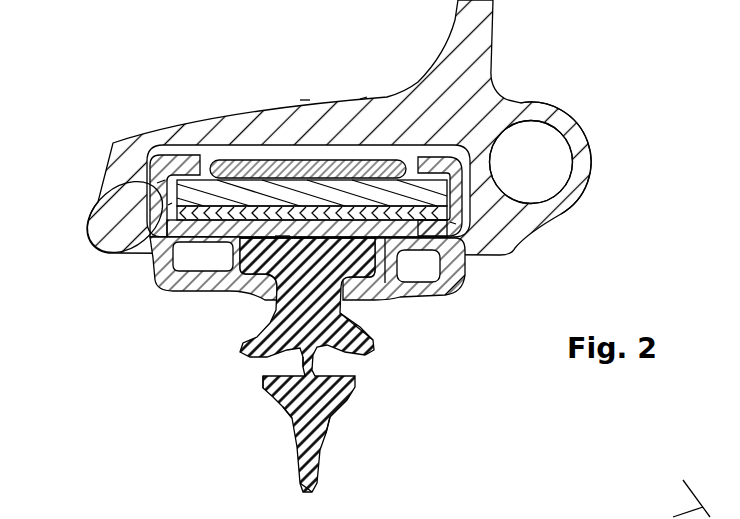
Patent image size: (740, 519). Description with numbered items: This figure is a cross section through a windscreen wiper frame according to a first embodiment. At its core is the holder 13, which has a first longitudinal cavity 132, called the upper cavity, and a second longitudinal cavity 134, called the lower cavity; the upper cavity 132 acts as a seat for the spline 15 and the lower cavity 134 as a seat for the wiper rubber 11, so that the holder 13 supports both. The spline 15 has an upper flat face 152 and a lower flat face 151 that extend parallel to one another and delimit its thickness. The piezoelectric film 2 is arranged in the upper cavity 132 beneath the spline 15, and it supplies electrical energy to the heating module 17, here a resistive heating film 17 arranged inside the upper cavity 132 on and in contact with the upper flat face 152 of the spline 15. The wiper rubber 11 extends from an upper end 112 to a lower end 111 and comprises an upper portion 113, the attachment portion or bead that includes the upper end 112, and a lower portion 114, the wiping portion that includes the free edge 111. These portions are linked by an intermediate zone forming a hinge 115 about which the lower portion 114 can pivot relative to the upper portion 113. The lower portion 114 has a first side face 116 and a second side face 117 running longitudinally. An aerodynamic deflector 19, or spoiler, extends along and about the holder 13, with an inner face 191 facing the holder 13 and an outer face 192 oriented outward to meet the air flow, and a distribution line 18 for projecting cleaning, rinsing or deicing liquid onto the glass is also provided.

The piezoelectric film 2 is at (168, 205).
The wiper rubber 11 is at (340, 410).
The lower end 111 is at (308, 492).
The upper end 112 is at (283, 237).
The upper portion 113 is at (340, 310).
The lower portion 114 is at (262, 382).
The hinge 115 is at (310, 357).
The first side face 116 is at (290, 405).
The second side face 117 is at (327, 432).
The holder 13 is at (157, 273).
The first longitudinal cavity 132 is at (157, 183).
The second longitudinal cavity 134 is at (395, 248).
The spline 15 is at (452, 187).
The lower flat face 151 is at (450, 222).
The upper flat face 152 is at (283, 237).
The heating module 17 is at (283, 237).
The distribution line 18 is at (571, 174).
The aerodynamic deflector 19 is at (328, 117).
The inner face 191 is at (367, 97).
The outer face 192 is at (305, 100).